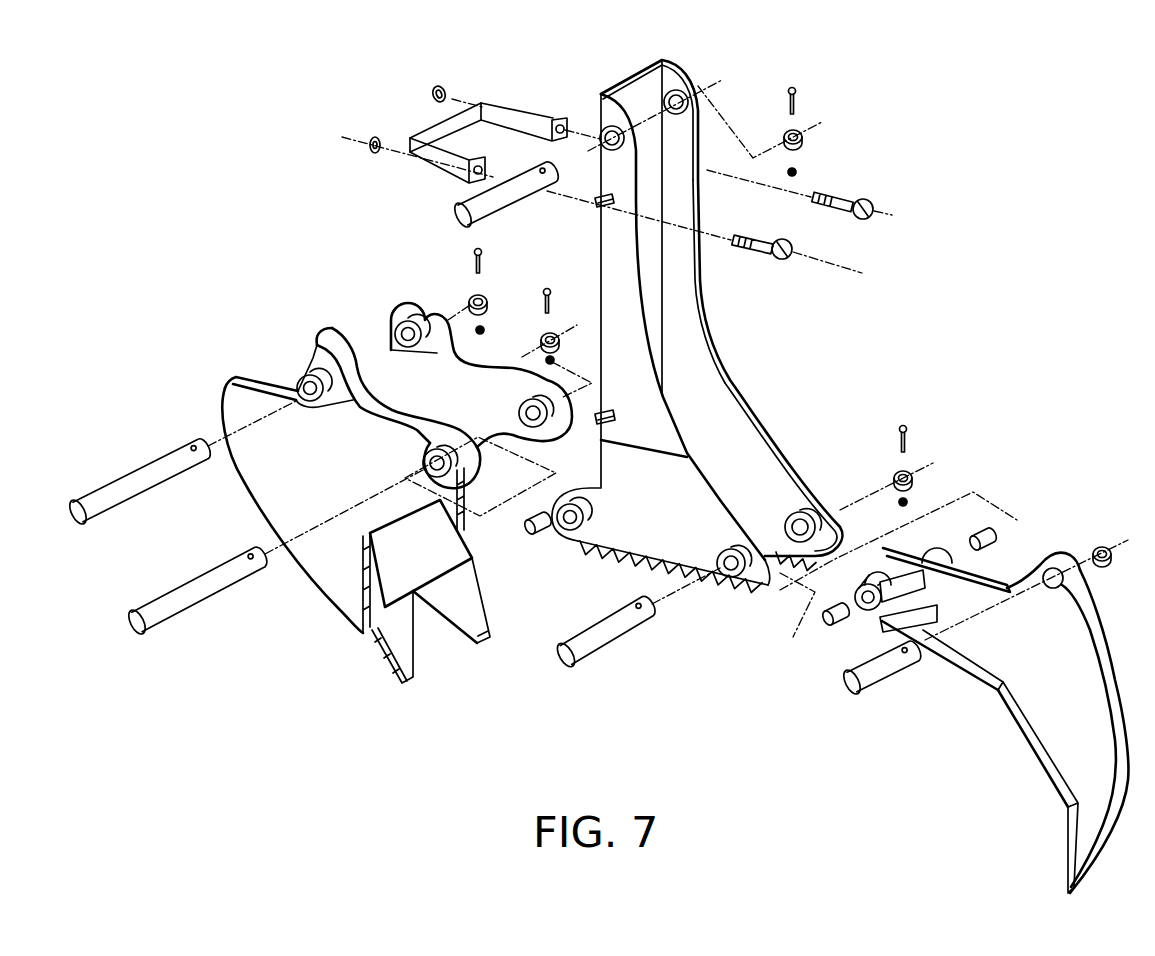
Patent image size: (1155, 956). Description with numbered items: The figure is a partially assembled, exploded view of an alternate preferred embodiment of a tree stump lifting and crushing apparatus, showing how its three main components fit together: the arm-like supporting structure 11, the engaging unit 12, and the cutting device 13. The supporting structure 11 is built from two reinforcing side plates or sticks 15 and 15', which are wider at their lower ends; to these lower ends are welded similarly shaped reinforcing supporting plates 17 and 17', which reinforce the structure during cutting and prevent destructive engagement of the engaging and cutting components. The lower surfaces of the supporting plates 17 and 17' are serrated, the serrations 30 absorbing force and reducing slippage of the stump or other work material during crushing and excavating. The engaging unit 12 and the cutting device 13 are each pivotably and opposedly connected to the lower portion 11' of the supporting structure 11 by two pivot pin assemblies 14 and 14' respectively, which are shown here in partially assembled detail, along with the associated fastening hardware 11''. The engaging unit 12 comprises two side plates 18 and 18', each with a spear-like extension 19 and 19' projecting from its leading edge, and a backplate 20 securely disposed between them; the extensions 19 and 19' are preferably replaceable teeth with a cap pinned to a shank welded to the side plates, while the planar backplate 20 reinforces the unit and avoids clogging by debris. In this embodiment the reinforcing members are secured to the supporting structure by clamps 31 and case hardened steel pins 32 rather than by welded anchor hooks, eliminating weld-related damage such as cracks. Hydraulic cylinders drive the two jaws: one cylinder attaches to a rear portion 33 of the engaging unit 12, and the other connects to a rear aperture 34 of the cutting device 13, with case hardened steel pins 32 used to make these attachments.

The supporting structure 11 is at (719, 346).
The lower portion of the supporting structure 11' is at (719, 142).
The fastener set 11'' is at (898, 518).
The engaging unit 12 is at (237, 680).
The cutting device 13 is at (973, 775).
The pivot pin assembly 14 is at (415, 463).
The pivot pin assembly 14' is at (731, 590).
The stick 15 is at (699, 310).
The stick 15' is at (718, 281).
The supporting plate 17 is at (661, 512).
The supporting plate 17' is at (781, 467).
The side plate 18 is at (351, 480).
The side plate 18' is at (481, 375).
The spear-like extension 19 is at (398, 662).
The spear-like extension 19' is at (461, 630).
The backplate 20 is at (428, 570).
The serrations 30 is at (617, 563).
The clamp 31 is at (428, 138).
The case hardened steel pin 32 is at (452, 210).
The rear portion of the engaging unit 33 is at (305, 372).
The aperture 34 is at (1052, 568).